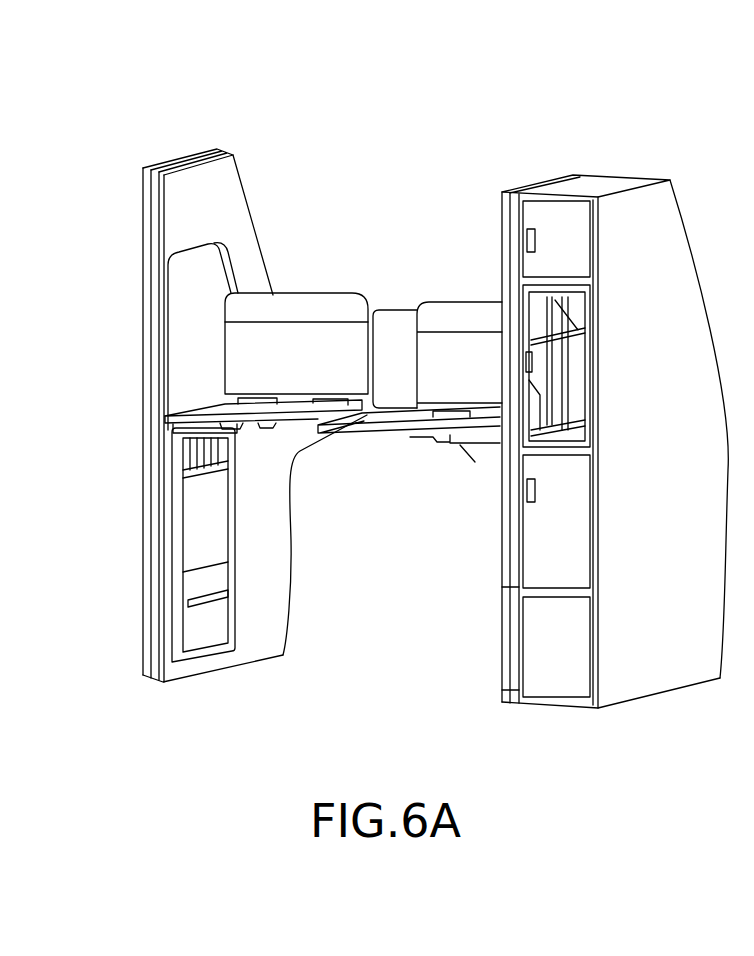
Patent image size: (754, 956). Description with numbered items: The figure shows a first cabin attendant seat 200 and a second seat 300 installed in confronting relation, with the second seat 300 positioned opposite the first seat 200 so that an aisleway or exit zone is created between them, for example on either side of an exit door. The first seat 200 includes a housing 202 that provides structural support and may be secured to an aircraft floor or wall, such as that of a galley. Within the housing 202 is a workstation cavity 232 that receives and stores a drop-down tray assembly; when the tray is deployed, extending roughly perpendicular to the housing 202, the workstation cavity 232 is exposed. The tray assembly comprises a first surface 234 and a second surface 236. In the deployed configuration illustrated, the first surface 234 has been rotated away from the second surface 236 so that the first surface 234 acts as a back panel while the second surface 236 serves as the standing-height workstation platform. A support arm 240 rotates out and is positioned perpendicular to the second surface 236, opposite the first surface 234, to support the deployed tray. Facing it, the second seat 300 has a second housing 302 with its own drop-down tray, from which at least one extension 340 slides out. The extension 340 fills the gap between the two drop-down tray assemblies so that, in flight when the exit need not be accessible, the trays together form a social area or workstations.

The cabin attendant seat 200 is at (252, 395).
The housing 202 is at (198, 237).
The workstation cavity 232 is at (200, 282).
The first surface 234 is at (311, 283).
The second surface 236 is at (218, 408).
The support arm 240 is at (288, 452).
The second seat 300 is at (531, 396).
The second housing 302 is at (643, 228).
The extension 340 is at (388, 332).